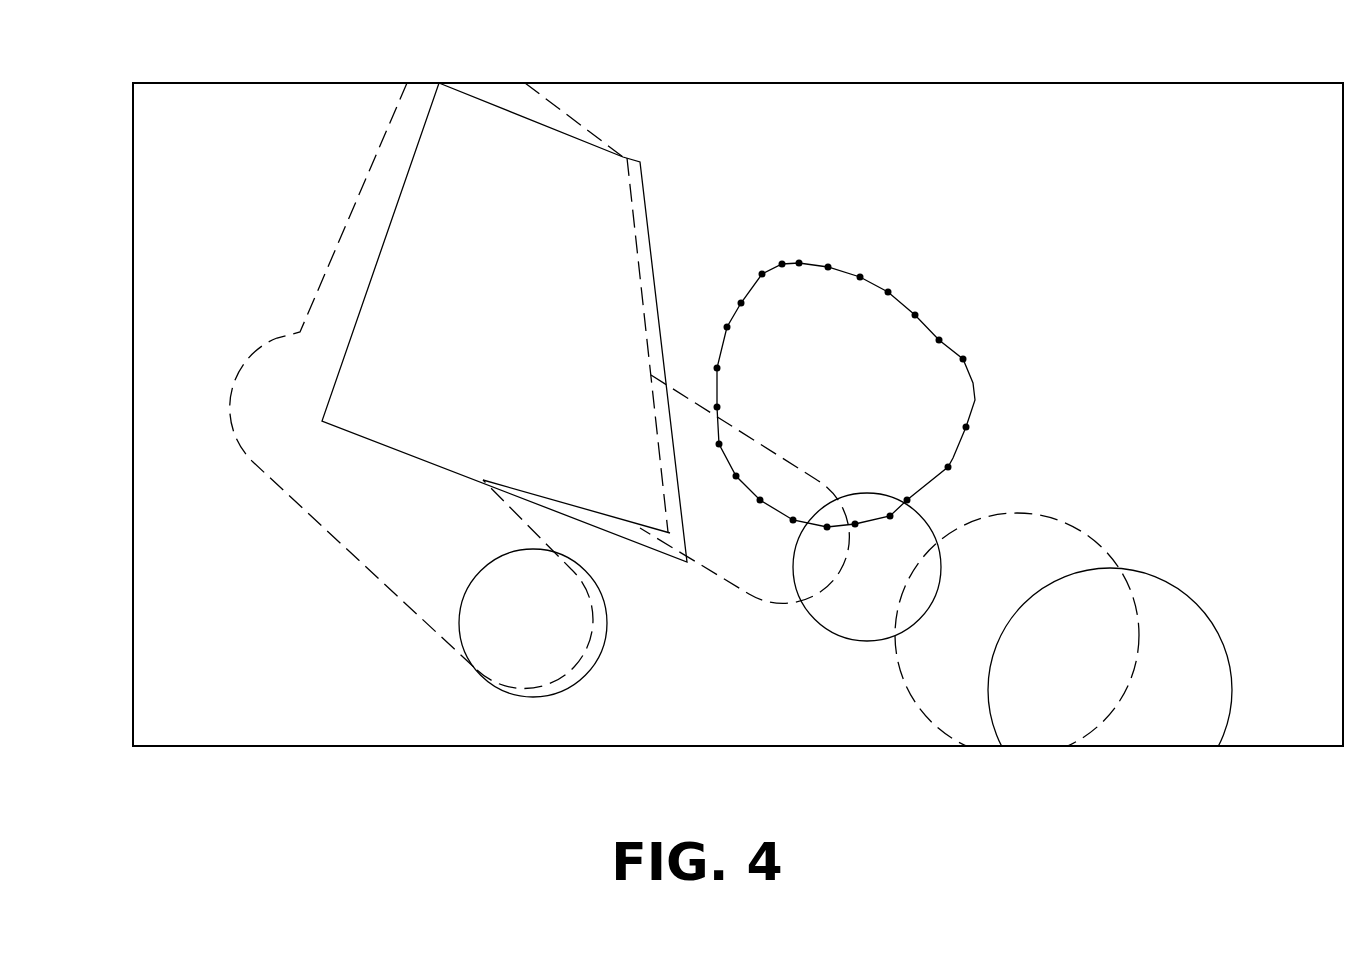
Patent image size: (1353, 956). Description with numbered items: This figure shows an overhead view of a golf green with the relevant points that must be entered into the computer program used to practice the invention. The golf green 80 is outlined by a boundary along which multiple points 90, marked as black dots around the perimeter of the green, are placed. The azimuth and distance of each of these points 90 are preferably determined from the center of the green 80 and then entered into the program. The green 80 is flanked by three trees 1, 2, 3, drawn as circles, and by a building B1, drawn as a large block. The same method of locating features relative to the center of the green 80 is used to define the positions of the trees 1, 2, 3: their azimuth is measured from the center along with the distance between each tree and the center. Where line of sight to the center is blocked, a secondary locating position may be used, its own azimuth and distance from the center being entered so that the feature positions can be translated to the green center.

The tree 1 is at (1063, 662).
The tree 2 is at (533, 623).
The tree 3 is at (867, 567).
The golf green 80 is at (846, 395).
The points 90 is at (939, 340).
The building B1 is at (504, 322).